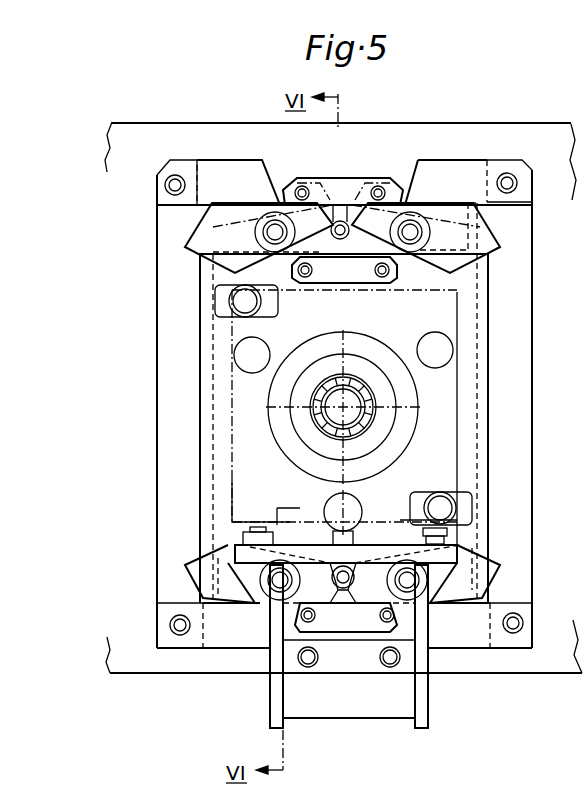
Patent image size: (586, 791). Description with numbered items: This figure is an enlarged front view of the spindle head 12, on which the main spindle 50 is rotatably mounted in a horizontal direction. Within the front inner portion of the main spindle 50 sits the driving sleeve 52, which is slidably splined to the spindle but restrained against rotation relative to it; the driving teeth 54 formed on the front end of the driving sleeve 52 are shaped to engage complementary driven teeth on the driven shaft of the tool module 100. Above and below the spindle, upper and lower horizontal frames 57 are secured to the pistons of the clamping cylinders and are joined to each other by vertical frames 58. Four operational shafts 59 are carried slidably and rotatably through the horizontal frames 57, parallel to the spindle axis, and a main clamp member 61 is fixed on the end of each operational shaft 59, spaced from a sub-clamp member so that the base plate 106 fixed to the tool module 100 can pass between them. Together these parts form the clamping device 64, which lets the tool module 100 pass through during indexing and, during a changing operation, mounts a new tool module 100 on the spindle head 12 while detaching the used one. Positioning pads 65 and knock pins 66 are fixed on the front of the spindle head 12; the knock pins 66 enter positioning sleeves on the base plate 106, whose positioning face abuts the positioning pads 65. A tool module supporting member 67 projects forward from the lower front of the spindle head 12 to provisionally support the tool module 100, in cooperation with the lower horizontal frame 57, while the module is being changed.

The spindle head 12 is at (370, 133).
The main spindle 50 is at (522, 452).
The driving sleeve 52 is at (368, 410).
The driving teeth 54 is at (322, 408).
The horizontal frames 57 is at (233, 172).
The vertical frames 58 is at (170, 320).
The operational shafts 59 is at (276, 228).
The main clamp member 61 is at (186, 244).
The clamping device 64 is at (470, 132).
The positioning pads 65 is at (243, 352).
The knock pins 66 is at (232, 300).
The tool module supporting member 67 is at (448, 548).
The tool module 100 is at (245, 416).
The base plate 106 is at (215, 480).